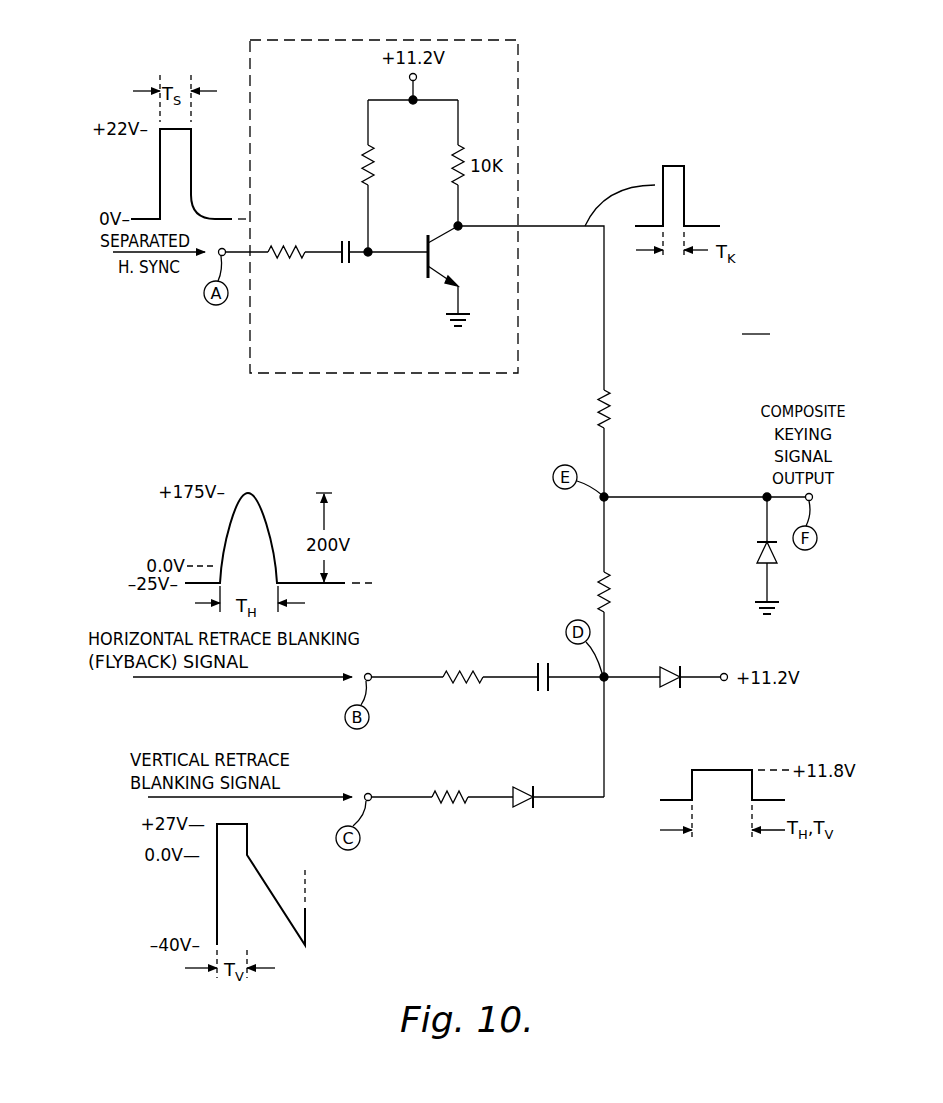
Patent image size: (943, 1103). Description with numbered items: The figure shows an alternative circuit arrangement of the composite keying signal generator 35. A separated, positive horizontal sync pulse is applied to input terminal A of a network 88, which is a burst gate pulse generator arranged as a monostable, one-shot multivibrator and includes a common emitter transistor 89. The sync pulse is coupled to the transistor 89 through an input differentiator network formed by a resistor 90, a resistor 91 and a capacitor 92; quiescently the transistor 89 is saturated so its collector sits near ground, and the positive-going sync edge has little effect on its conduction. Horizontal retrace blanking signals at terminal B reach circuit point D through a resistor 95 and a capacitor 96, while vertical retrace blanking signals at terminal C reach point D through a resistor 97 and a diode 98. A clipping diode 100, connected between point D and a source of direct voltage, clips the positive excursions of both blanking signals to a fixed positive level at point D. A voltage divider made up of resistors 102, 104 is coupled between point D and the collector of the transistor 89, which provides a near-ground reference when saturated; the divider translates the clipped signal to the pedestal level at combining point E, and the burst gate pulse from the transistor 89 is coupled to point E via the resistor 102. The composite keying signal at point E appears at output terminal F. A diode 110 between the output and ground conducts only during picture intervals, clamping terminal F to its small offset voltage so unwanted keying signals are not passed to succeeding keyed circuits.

The composite keying signal generator 35 is at (756, 322).
The network 88 is at (381, 38).
The common emitter transistor 89 is at (476, 267).
The resistor 90 is at (287, 245).
The resistor 91 is at (364, 160).
The capacitor 92 is at (343, 240).
The resistor 95 is at (463, 671).
The capacitor 96 is at (540, 662).
The resistor 97 is at (450, 791).
The diode 98 is at (524, 787).
The diode 100 is at (661, 688).
The resistor 102 is at (612, 412).
The resistor 104 is at (612, 592).
The diode 110 is at (757, 556).